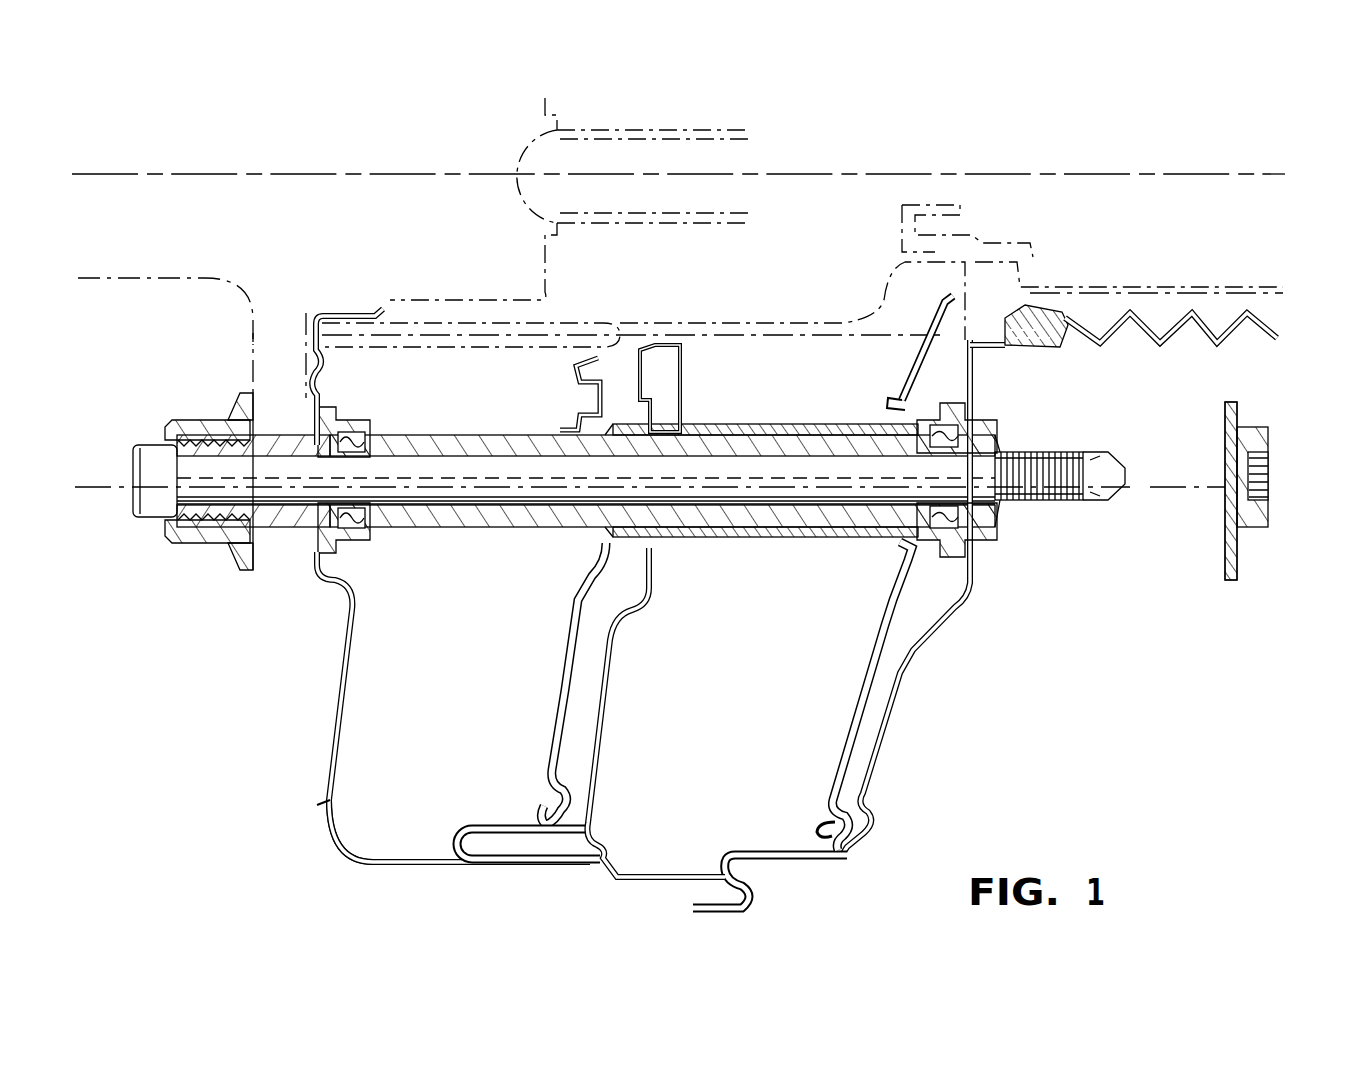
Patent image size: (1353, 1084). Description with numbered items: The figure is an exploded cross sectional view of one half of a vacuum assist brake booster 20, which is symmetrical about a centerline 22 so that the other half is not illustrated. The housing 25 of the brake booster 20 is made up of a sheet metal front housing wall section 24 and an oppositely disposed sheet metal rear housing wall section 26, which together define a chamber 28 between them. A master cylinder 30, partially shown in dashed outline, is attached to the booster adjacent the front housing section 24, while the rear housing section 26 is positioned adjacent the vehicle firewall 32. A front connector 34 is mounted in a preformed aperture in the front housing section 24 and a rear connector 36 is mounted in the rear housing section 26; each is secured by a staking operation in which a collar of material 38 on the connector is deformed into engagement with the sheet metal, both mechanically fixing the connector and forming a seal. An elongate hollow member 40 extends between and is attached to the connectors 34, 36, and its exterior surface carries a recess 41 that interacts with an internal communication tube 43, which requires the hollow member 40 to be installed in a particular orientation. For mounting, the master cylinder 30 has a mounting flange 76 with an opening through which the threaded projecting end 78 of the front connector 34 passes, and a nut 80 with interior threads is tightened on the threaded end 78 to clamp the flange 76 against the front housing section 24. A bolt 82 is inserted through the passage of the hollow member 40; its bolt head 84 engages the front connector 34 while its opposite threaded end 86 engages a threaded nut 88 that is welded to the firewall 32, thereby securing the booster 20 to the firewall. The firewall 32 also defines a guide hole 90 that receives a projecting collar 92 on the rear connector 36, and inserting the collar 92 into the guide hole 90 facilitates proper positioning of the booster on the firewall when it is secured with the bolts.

The vacuum assist brake booster 20 is at (318, 806).
The centerline 22 is at (300, 174).
The front housing wall section 24 is at (335, 720).
The housing 25 is at (478, 864).
The rear housing wall section 26 is at (888, 727).
The chamber 28 is at (365, 835).
The master cylinder 30 is at (167, 272).
The firewall 32 is at (1226, 568).
The front connector 34 is at (253, 545).
The rear connector 36 is at (1000, 520).
The collar of material 38 is at (310, 548).
The elongate hollow member 40 is at (515, 433).
The recess 41 is at (612, 440).
The internal communication tube 43 is at (720, 430).
The mounting flange 76 is at (253, 333).
The threaded projecting end 78 is at (205, 522).
The nut 80 is at (175, 425).
The bolt 82 is at (443, 470).
The bolt head 84 is at (150, 455).
The threaded end 86 is at (1068, 500).
The threaded nut 88 is at (1266, 480).
The guide hole 90 is at (1228, 462).
The projecting collar 92 is at (1003, 425).